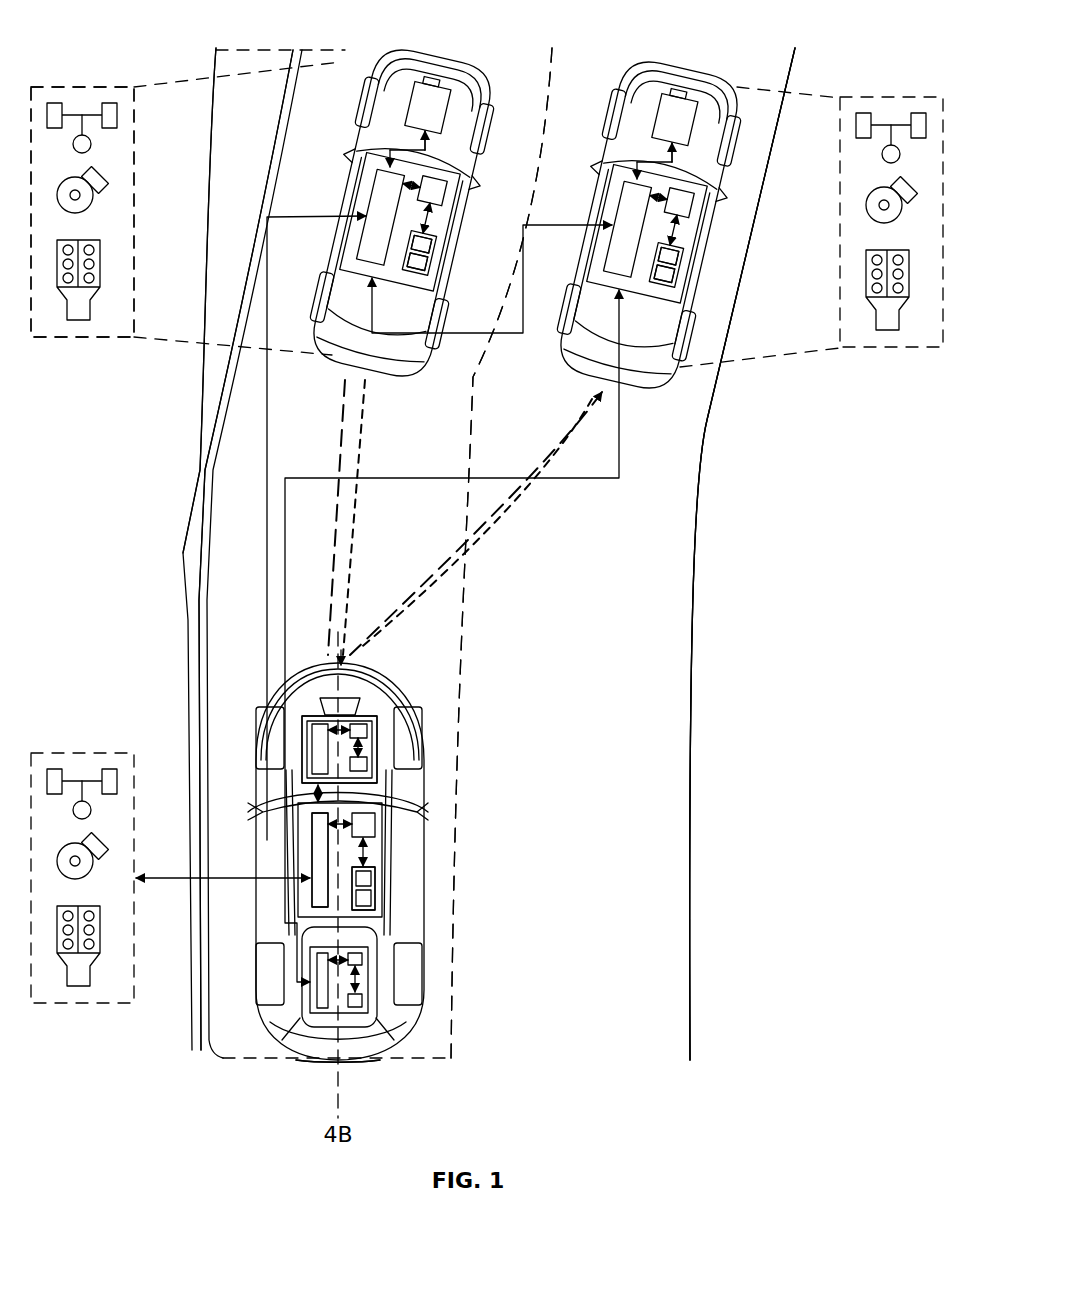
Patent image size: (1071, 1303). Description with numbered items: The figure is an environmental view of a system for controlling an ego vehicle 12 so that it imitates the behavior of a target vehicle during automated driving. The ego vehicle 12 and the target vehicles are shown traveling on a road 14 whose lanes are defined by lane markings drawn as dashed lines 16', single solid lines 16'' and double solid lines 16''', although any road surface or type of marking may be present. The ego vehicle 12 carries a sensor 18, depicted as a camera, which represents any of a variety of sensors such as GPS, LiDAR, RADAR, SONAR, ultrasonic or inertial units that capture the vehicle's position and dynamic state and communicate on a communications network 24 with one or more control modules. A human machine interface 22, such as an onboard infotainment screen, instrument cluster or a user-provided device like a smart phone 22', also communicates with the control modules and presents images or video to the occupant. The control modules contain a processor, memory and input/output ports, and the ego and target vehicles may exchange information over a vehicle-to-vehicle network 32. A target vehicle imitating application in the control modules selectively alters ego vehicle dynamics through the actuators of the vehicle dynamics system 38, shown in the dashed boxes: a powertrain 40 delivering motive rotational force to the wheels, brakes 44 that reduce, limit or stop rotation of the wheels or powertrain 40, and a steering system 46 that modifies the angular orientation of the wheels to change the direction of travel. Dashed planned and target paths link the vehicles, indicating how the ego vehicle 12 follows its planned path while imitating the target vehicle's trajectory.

The ego vehicle 12 is at (372, 861).
The road 14 is at (668, 715).
The dashed lines 16' is at (501, 554).
The single solid lines 16'' is at (742, 554).
The double solid lines 16''' is at (210, 550).
The sensor 18 is at (367, 701).
The human machine interface 22 is at (338, 1082).
The smart phone 22' is at (357, 1082).
The communications network 24 is at (183, 553).
The vehicle-to-vehicle network 32 is at (164, 316).
The vehicle dynamics system 38 is at (82, 840).
The powertrain 40 is at (118, 946).
The brakes 44 is at (118, 856).
The steering system 46 is at (126, 798).